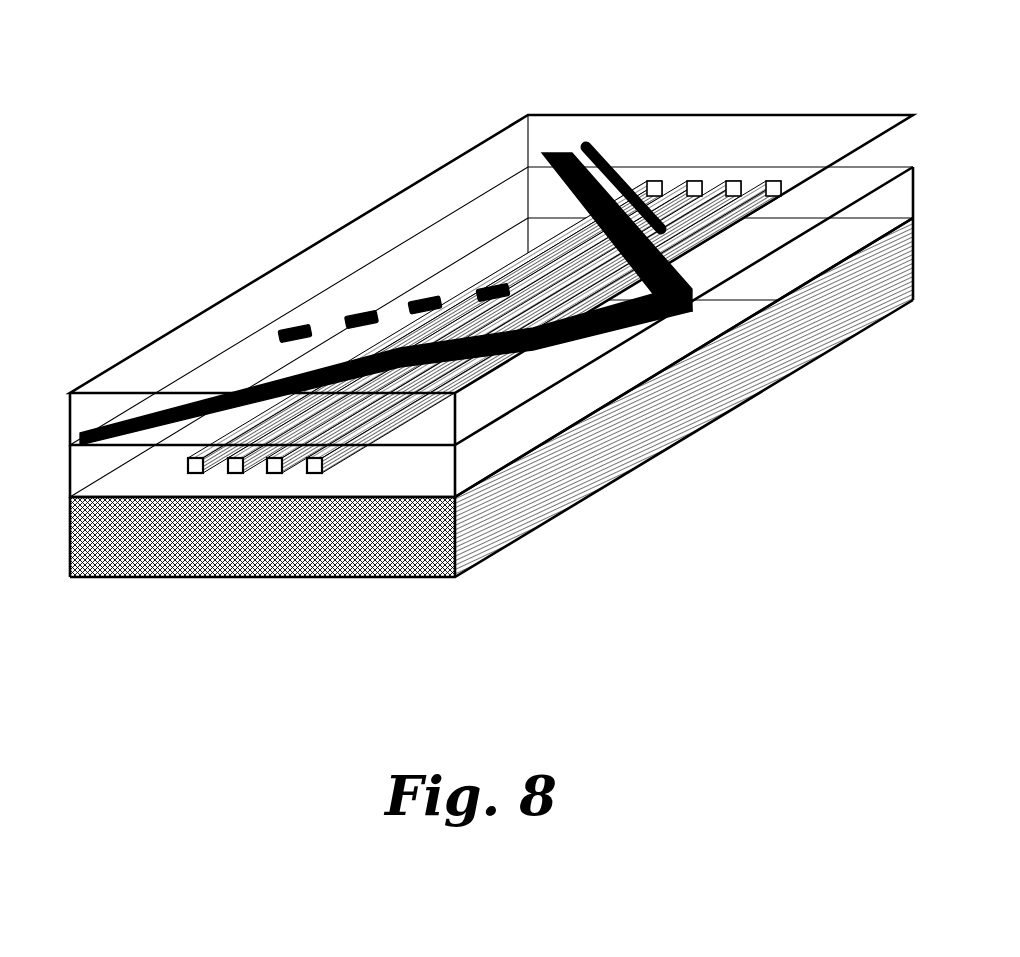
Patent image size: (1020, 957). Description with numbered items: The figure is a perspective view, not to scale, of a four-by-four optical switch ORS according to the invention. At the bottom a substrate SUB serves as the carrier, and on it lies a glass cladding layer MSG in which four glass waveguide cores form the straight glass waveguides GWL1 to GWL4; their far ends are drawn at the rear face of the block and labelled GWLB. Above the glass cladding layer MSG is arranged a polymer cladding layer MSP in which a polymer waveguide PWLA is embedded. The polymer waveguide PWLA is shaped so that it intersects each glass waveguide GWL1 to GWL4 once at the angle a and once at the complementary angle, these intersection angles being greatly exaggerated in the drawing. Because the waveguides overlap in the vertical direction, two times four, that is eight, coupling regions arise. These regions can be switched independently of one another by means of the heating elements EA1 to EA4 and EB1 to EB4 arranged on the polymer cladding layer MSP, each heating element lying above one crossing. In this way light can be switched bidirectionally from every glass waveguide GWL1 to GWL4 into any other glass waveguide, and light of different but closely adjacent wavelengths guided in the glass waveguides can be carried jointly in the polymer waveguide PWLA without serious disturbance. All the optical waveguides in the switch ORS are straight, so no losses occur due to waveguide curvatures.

The polymer waveguide PWLA is at (178, 403).
The heating element EA1 is at (287, 328).
The heating element EA4 is at (481, 285).
The heating element EB1 is at (581, 150).
The heating element EB4 is at (646, 196).
The gate wiring lines B (rear ends) GWLB is at (672, 222).
The glass waveguide GWL1 is at (197, 476).
The glass waveguide GWL4 is at (317, 476).
The polymer cladding layer MSP is at (492, 400).
The glass cladding layer MSG is at (478, 465).
The substrate SUB is at (610, 468).
The switch ORS is at (768, 460).